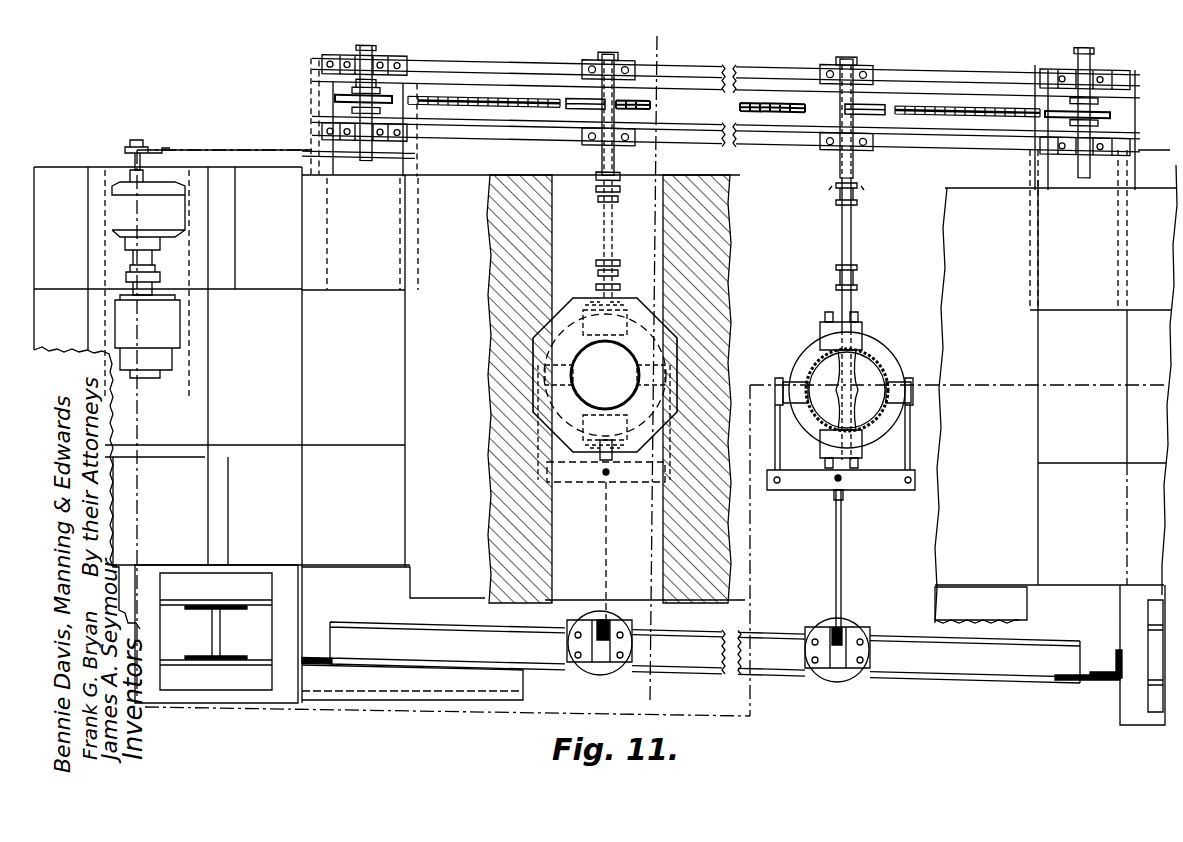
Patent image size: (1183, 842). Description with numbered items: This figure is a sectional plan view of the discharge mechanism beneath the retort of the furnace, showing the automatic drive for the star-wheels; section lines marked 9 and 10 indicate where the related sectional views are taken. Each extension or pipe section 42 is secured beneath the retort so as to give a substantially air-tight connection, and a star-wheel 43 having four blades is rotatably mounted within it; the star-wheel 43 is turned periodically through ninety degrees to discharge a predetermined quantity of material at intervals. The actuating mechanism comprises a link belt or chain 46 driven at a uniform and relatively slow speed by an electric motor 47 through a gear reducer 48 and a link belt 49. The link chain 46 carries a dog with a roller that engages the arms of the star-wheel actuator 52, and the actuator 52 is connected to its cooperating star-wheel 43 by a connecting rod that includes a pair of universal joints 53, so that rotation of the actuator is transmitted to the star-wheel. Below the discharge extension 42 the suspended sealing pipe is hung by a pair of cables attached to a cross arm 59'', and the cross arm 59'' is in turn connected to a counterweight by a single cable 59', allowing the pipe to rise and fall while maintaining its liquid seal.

The extension or pipe section 42 is at (858, 352).
The star-wheel 43 is at (860, 362).
The link belt or chain 46 is at (750, 108).
The electric motor 47 is at (125, 320).
The gear reducer 48 is at (118, 213).
The link belt 49 is at (215, 150).
The star-wheel actuator 52 is at (582, 100).
The universal joints 53 is at (857, 190).
The single cable 59' is at (830, 578).
The cross arm 59'' is at (841, 456).
The section line 9 is at (657, 36).
The section line 10 is at (145, 705).